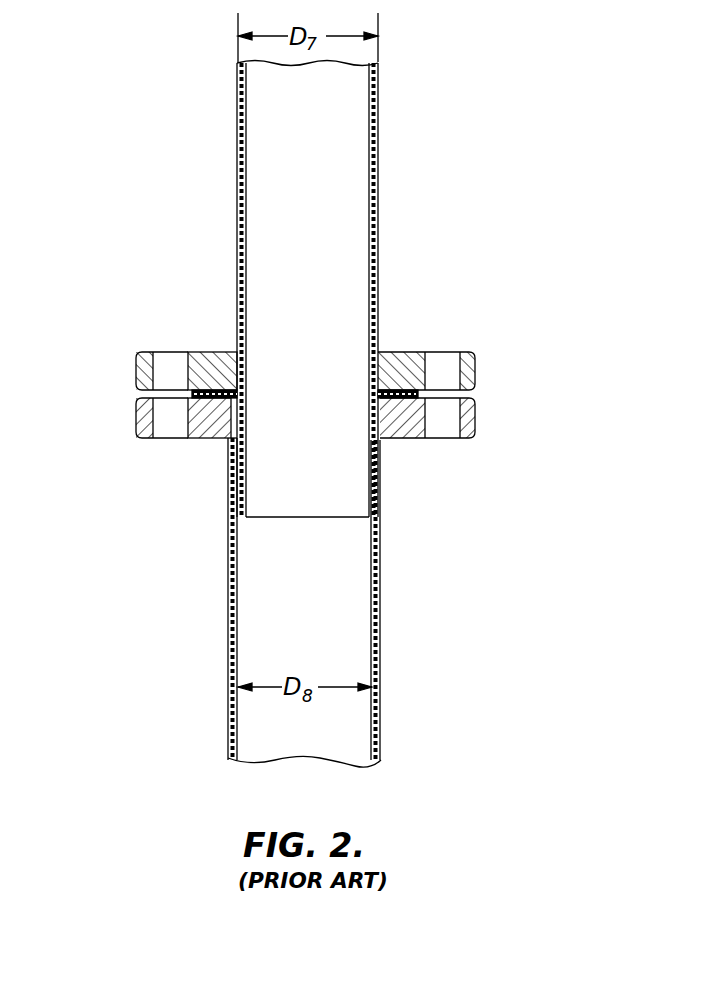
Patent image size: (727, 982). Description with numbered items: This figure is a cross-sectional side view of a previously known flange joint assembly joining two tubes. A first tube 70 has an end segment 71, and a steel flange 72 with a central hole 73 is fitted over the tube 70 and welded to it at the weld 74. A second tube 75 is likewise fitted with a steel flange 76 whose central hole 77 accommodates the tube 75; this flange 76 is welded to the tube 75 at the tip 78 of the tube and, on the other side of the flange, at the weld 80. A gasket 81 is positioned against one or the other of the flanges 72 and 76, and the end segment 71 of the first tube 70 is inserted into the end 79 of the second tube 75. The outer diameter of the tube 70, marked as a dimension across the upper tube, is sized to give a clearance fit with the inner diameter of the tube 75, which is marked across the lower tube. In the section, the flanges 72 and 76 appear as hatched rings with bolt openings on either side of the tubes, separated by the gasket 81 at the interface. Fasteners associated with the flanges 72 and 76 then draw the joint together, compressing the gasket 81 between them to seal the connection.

The first tube 70 is at (380, 160).
The end segment 71 is at (369, 480).
The steel flange 72 is at (407, 353).
The central hole 73 is at (245, 362).
The weld 74 is at (378, 352).
The second tube 75 is at (382, 633).
The steel flange 76 is at (198, 440).
The central hole 77 is at (369, 447).
The tip 78 is at (246, 392).
The end 79 is at (246, 423).
The weld 80 is at (231, 440).
The gasket 81 is at (206, 350).